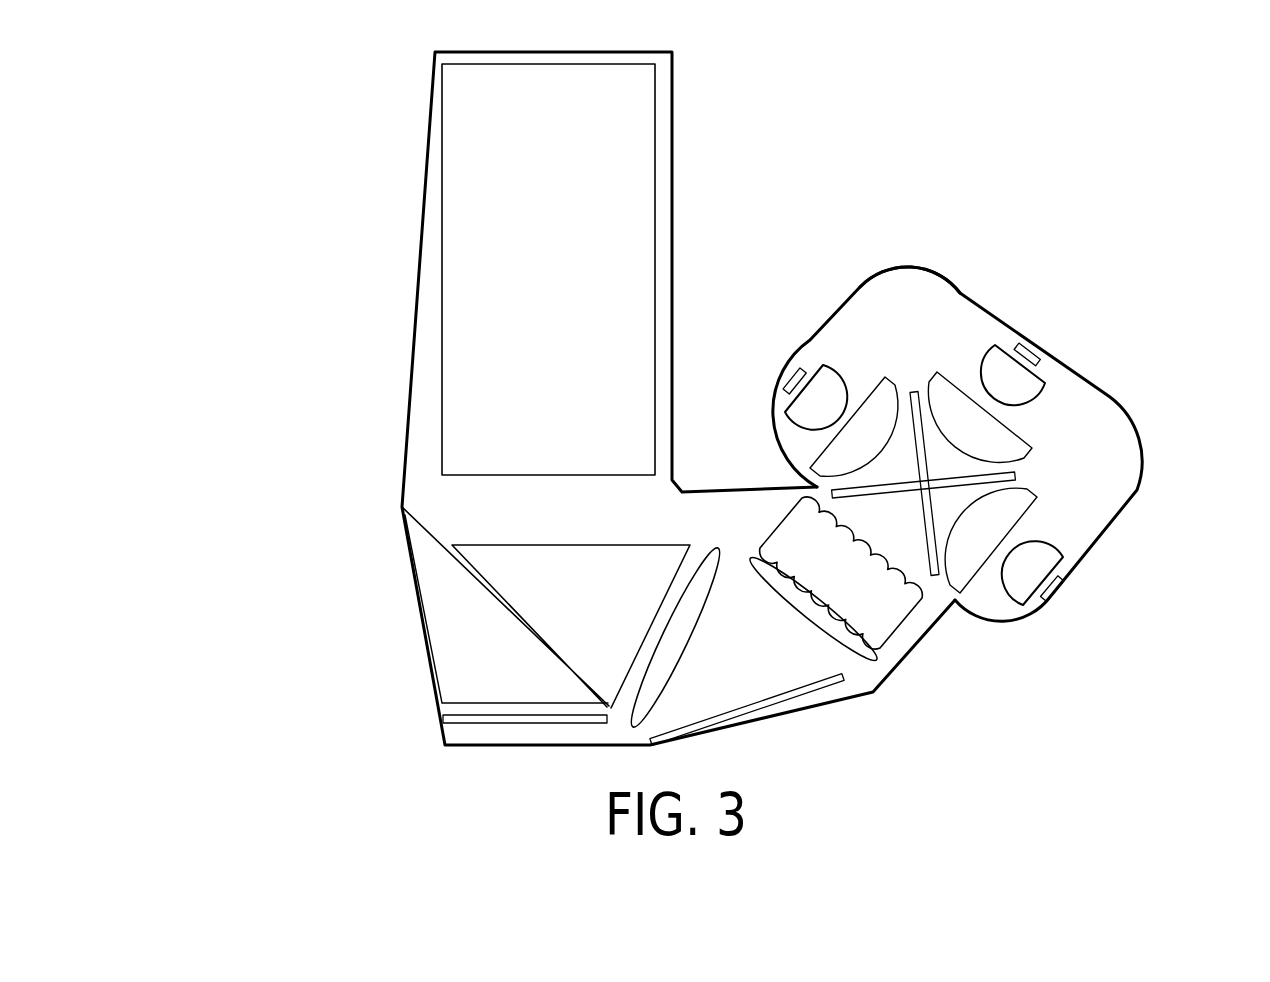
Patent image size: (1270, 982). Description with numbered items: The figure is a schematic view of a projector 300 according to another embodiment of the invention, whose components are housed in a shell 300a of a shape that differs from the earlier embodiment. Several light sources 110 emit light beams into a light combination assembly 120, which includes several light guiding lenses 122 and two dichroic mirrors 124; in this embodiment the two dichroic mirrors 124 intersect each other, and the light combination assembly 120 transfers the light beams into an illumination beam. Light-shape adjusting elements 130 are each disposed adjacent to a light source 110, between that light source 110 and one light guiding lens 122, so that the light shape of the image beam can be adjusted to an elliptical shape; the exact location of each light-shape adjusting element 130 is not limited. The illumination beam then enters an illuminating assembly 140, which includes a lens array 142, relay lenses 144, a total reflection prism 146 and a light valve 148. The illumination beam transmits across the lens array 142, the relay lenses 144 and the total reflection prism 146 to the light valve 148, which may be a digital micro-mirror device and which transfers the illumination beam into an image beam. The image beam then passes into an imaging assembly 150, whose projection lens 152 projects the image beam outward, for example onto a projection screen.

The projector 300 is at (210, 131).
The shell 300a is at (908, 263).
The light source 110 is at (1037, 351).
The light combination assembly 120 is at (993, 397).
The light guiding lens 122 is at (1033, 441).
The dichroic mirror 124 is at (1023, 472).
The light-shape adjusting element 130 is at (1018, 385).
The illuminating assembly 140 is at (649, 648).
The lens array 142 is at (890, 606).
The relay lens 144 is at (860, 650).
The total reflection prism 146 is at (483, 663).
The light valve 148 is at (548, 725).
The imaging assembly 150 is at (454, 269).
The projection lens 152 is at (442, 300).